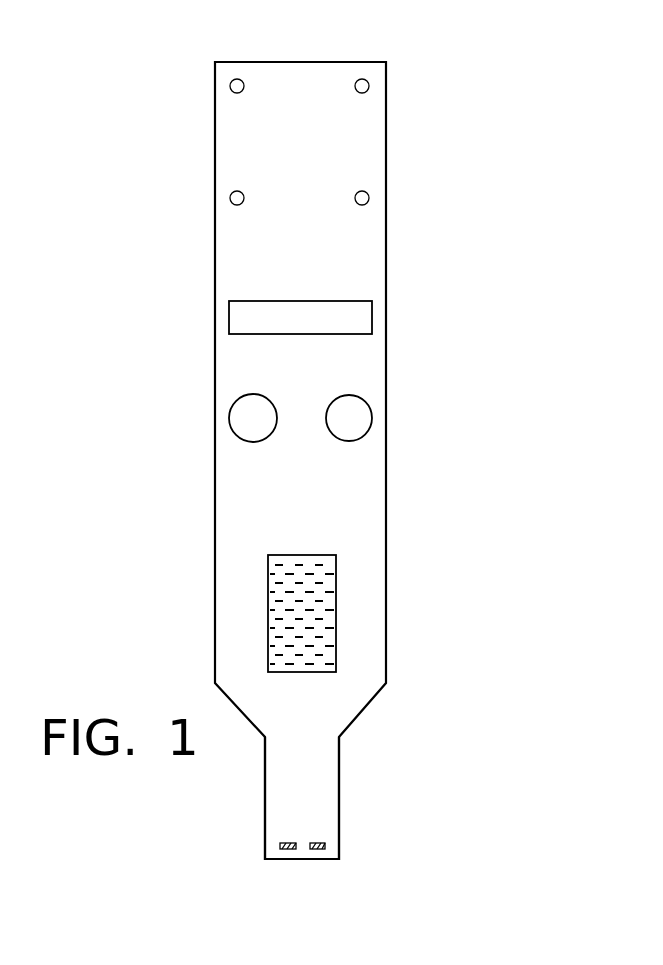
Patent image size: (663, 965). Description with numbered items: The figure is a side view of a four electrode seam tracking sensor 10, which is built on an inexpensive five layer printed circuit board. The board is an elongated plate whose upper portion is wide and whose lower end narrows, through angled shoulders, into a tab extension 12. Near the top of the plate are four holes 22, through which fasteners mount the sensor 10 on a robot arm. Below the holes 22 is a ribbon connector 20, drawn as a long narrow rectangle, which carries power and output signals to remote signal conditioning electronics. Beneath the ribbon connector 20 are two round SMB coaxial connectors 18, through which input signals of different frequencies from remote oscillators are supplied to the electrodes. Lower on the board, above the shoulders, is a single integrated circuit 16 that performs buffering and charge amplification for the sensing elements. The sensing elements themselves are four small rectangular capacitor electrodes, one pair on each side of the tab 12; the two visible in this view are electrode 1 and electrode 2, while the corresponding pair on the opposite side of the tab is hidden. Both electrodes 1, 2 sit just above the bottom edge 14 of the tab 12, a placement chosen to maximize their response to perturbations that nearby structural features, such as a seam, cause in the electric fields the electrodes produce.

The electrode 1 is at (285, 841).
The electrode 2 is at (318, 841).
The sensor 10 is at (440, 478).
The tab extension 12 is at (312, 780).
The bottom edge 14 is at (302, 860).
The integrated circuit 16 is at (310, 607).
The SMB coaxial connectors 18 is at (257, 410).
The ribbon connector 20 is at (347, 317).
The holes 22 is at (361, 191).